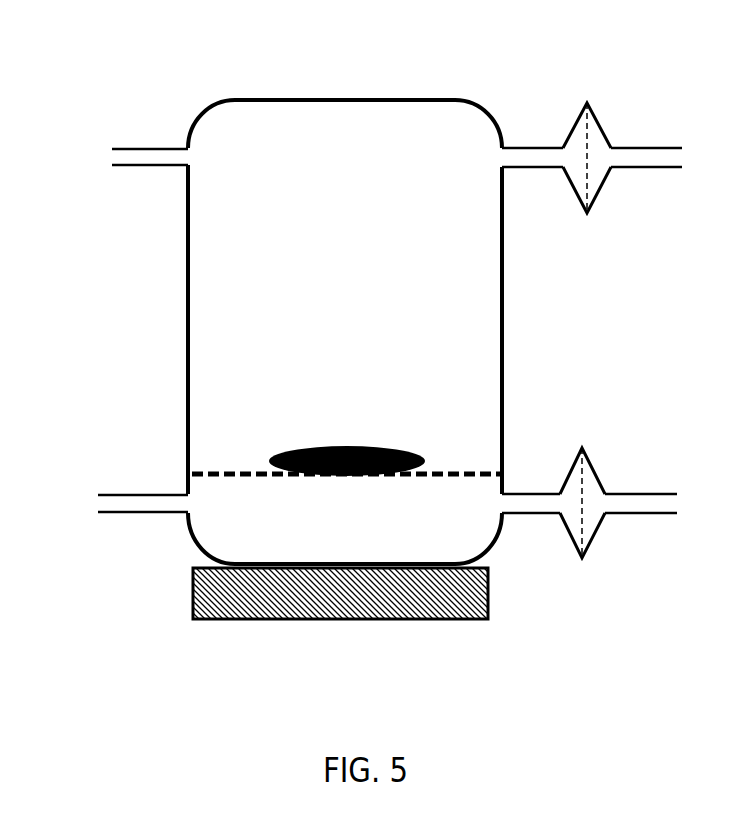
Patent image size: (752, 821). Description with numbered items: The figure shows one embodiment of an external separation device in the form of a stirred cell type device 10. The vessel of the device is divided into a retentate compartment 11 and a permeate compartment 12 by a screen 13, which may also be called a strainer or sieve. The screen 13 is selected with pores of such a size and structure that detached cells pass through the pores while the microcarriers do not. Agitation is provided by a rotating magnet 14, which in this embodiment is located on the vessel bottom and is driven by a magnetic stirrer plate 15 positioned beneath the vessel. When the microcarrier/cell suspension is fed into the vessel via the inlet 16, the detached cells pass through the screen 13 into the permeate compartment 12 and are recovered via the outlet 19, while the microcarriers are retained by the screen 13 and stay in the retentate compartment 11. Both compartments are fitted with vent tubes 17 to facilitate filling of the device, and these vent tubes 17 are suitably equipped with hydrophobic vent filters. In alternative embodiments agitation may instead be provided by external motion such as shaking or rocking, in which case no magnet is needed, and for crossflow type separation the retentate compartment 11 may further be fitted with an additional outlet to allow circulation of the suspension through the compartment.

The stirred cell type device 10 is at (418, 332).
The retentate compartment 11 is at (397, 260).
The permeate compartment 12 is at (457, 513).
The screen 13 is at (280, 473).
The rotating magnet 14 is at (315, 445).
The magnetic stirrer plate 15 is at (457, 595).
The inlet 16 is at (157, 155).
The vent tubes 17 is at (558, 168).
The outlet 19 is at (143, 500).